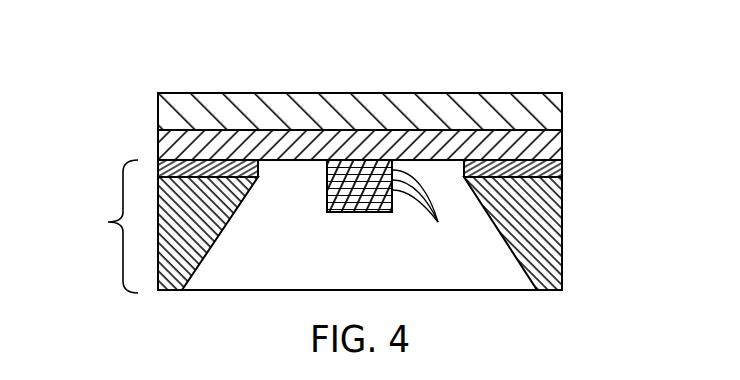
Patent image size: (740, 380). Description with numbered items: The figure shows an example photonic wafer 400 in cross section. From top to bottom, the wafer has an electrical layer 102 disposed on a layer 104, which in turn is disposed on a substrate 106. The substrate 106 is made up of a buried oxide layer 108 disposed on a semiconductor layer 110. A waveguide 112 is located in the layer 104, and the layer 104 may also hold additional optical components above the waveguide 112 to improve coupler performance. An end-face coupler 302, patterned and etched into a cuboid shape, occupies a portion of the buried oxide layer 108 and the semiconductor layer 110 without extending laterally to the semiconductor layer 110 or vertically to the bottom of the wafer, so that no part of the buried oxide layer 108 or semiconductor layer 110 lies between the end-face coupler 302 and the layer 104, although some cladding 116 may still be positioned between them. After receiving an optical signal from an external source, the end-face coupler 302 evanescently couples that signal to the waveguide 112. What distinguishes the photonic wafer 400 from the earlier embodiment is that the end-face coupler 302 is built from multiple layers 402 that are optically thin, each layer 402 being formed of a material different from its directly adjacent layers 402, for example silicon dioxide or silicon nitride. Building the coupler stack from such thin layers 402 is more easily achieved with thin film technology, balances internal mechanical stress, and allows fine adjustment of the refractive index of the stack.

The photonic wafer 400 is at (385, 28).
The electrical layer 102 is at (562, 112).
The layer 104 is at (562, 146).
The buried oxide layer 108 is at (562, 170).
The semiconductor layer 110 is at (562, 237).
The substrate 106 is at (98, 226).
The waveguide 112 is at (359, 158).
The end-face coupler 302 is at (360, 213).
The layers 402 is at (428, 209).
The cladding 116 is at (477, 281).